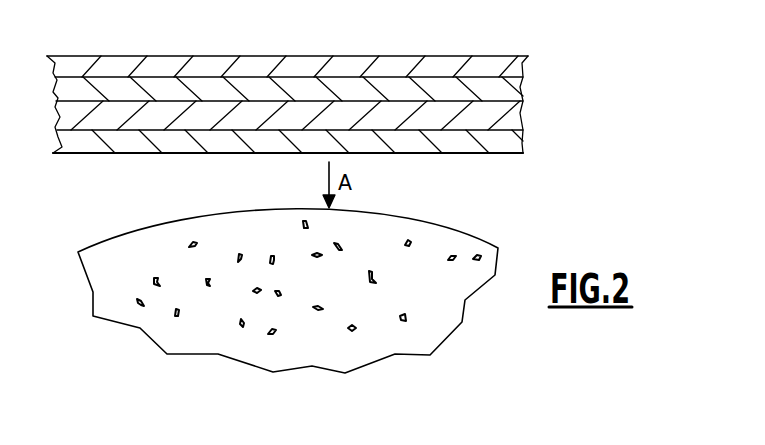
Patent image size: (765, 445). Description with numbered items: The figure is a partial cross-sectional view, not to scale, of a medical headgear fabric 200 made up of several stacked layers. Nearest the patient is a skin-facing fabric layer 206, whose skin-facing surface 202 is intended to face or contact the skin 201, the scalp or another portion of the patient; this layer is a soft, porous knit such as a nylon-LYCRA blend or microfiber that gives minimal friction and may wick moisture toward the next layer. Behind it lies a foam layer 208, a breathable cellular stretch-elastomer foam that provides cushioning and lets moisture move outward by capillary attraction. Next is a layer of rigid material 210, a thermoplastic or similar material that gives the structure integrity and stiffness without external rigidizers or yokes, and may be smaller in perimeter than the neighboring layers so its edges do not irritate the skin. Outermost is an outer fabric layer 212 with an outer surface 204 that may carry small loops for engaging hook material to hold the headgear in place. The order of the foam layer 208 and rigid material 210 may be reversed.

The medical headgear fabric 200 is at (665, 143).
The skin of the patient 201 is at (482, 243).
The skin-facing surface 202 is at (170, 153).
The outer surface 204 is at (284, 55).
The skin-facing fabric layer 206 is at (529, 143).
The foam layer 208 is at (527, 117).
The layer of rigid material 210 is at (527, 88).
The outer fabric layer 212 is at (528, 63).